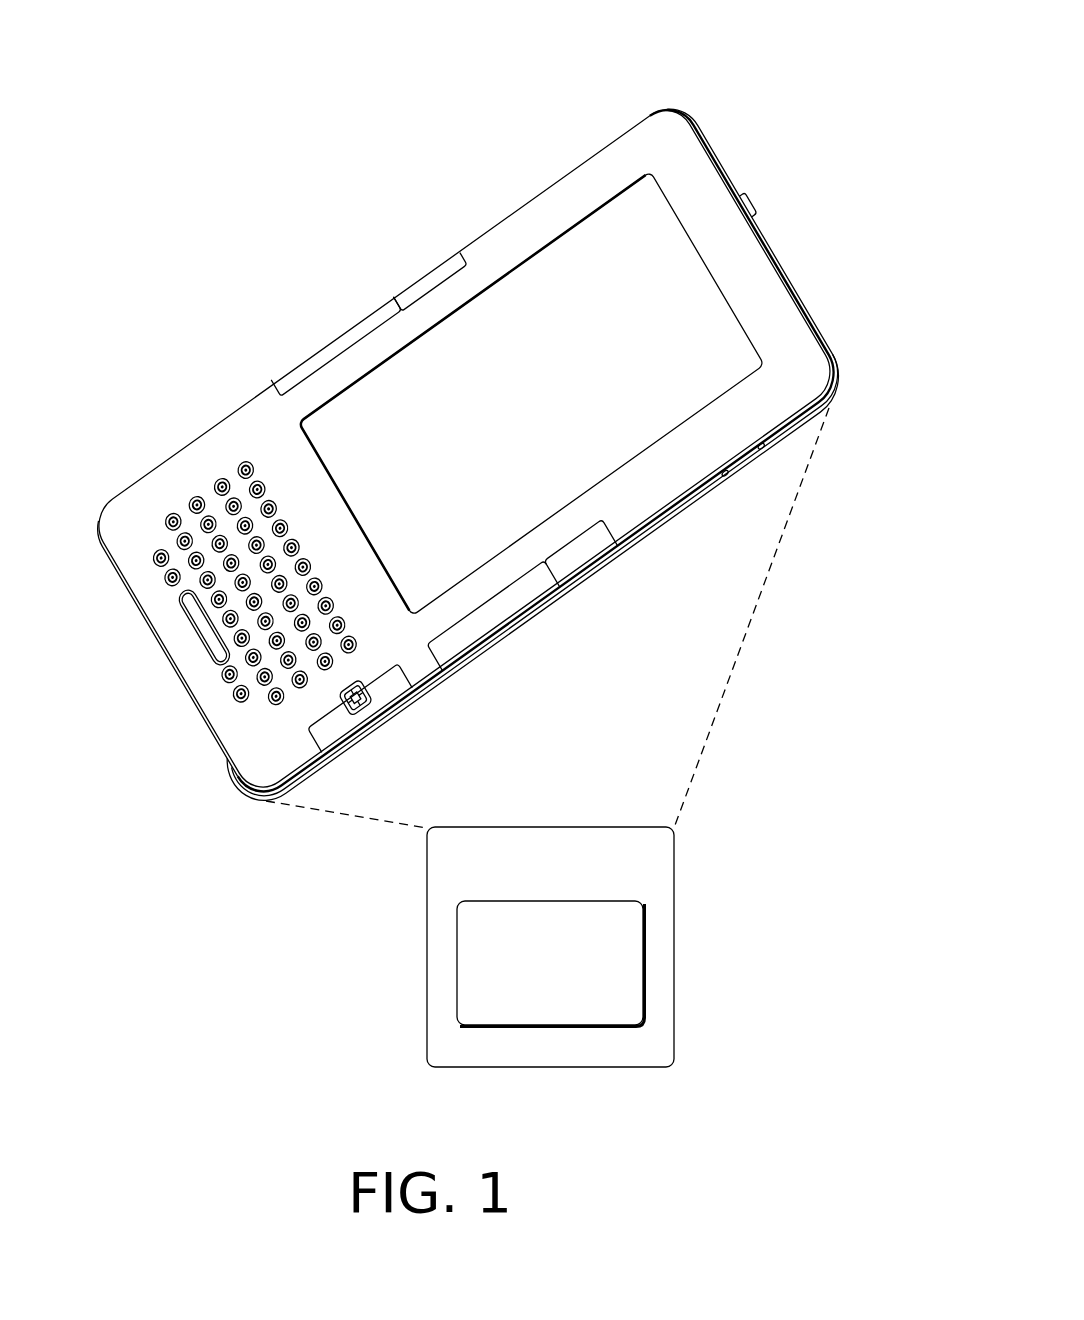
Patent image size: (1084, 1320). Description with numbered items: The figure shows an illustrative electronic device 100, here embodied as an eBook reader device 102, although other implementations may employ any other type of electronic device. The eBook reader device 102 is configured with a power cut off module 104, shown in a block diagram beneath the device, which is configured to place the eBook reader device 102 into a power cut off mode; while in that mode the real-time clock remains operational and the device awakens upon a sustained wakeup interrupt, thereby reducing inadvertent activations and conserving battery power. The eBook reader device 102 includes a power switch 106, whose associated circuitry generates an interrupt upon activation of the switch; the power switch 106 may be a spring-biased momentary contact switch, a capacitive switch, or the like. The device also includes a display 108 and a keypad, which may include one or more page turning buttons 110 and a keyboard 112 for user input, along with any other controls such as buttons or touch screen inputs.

The electronic device 100 is at (762, 68).
The eBook reader device 102 is at (533, 883).
The power cut off module 104 is at (533, 996).
The power switch 106 is at (572, 160).
The display 108 is at (645, 215).
The page turning buttons 110 is at (350, 338).
The keyboard 112 is at (208, 522).